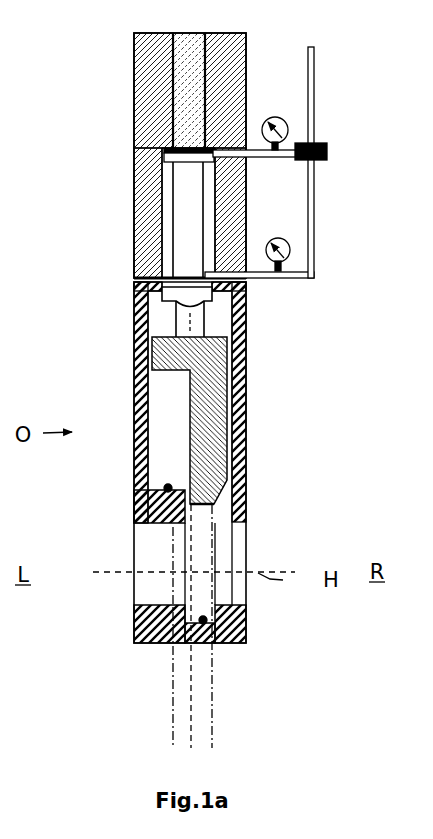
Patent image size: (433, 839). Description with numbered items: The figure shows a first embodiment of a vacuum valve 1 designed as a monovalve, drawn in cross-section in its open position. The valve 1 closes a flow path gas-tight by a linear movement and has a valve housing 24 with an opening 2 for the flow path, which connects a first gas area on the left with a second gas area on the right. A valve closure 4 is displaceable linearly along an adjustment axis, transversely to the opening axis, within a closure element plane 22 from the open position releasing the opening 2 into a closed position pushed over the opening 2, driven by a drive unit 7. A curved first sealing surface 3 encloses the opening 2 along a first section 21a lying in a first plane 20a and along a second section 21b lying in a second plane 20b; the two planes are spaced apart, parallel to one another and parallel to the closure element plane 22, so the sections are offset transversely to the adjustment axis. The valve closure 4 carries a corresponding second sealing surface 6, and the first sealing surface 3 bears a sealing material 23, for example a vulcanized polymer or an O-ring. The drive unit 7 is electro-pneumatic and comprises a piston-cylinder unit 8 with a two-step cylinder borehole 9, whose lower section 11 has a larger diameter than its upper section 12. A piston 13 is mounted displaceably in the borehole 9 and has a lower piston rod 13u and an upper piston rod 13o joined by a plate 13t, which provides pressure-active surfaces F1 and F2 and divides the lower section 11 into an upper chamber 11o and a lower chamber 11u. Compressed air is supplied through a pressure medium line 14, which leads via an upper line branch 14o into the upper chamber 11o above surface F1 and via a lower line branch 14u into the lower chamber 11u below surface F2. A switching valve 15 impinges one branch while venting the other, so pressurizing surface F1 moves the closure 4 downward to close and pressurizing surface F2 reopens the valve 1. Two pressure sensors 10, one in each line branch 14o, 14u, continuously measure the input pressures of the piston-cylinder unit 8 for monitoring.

The vacuum valve 1 is at (85, 47).
The opening 2 is at (143, 593).
The first sealing surface 3 is at (162, 485).
The valve closure 4 is at (205, 453).
The second sealing surface 6 is at (163, 383).
The drive unit 7 is at (327, 77).
The piston-cylinder unit 8 is at (122, 258).
The cylinder borehole 9 is at (134, 222).
The pressure sensor 10 is at (285, 120).
The lower section of the cylinder borehole 11 is at (163, 246).
The upper chamber 11o is at (162, 147).
The lower chamber 11u is at (167, 195).
The upper section of the cylinder borehole 12 is at (170, 65).
The piston 13 is at (224, 90).
The upper piston rod 13o is at (192, 80).
The plate 13t is at (190, 158).
The lower piston rod 13u is at (190, 237).
The pressure medium line 14 is at (312, 69).
The upper line branch 14o is at (312, 206).
The lower line branch 14u is at (313, 267).
The switching valve 15 is at (328, 157).
The pressure-active surface F1 is at (165, 152).
The pressure-active surface F2 is at (165, 162).
The first plane 20a is at (173, 718).
The second plane 20b is at (213, 693).
The first section 21a is at (137, 537).
The second section 21b is at (247, 644).
The closure element plane 22 is at (191, 698).
The sealing material 23 is at (136, 512).
The valve housing 24 is at (233, 400).